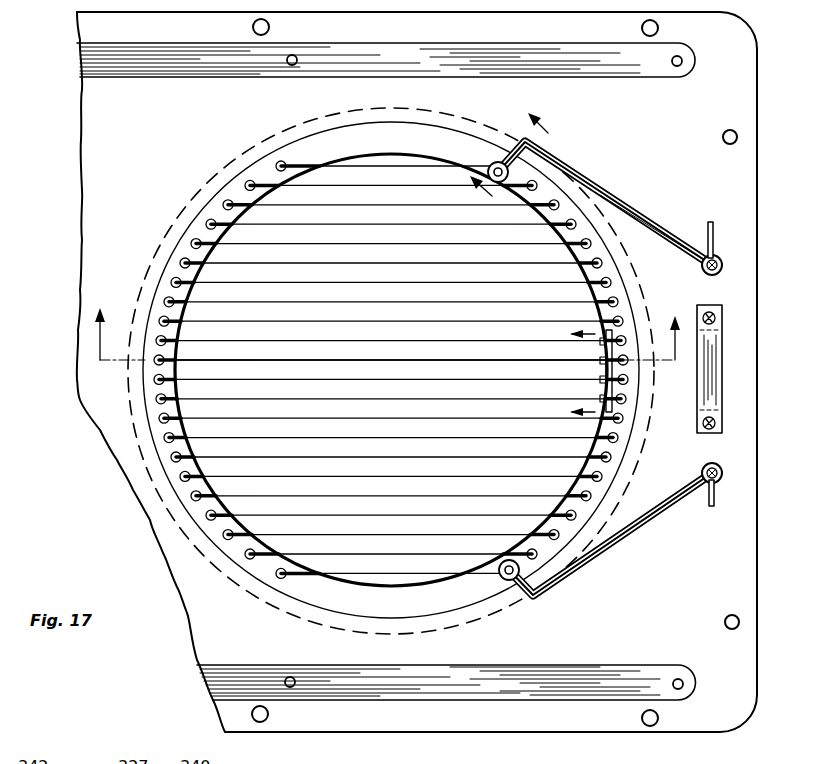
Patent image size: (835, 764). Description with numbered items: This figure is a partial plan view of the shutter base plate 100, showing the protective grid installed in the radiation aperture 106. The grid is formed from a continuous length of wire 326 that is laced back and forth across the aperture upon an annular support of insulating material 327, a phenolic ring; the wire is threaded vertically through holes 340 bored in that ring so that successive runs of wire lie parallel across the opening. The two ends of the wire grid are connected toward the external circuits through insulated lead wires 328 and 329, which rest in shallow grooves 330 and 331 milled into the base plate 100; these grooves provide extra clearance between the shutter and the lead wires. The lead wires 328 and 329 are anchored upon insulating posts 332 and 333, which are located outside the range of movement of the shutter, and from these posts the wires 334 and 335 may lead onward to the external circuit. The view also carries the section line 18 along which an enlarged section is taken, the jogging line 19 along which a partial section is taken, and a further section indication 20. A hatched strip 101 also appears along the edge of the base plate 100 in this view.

The base plate 100 is at (93, 263).
The hatched channel 101 is at (103, 47).
The radiation aperture 106 is at (202, 209).
The wire 326 is at (450, 250).
The annular support of insulating material 327 is at (215, 270).
The insulated lead wire 328 is at (605, 206).
The insulated lead wire 329 is at (615, 548).
The shallow groove 330 is at (666, 234).
The shallow groove 331 is at (583, 573).
The insulating post 332 is at (717, 262).
The insulating post 333 is at (704, 468).
The wire 334 is at (714, 224).
The wire 335 is at (712, 506).
The holes 340 is at (612, 372).
The section line 18— 18 is at (386, 324).
The jogging section line 19— 19 is at (570, 373).
The section arrows 20 is at (494, 145).